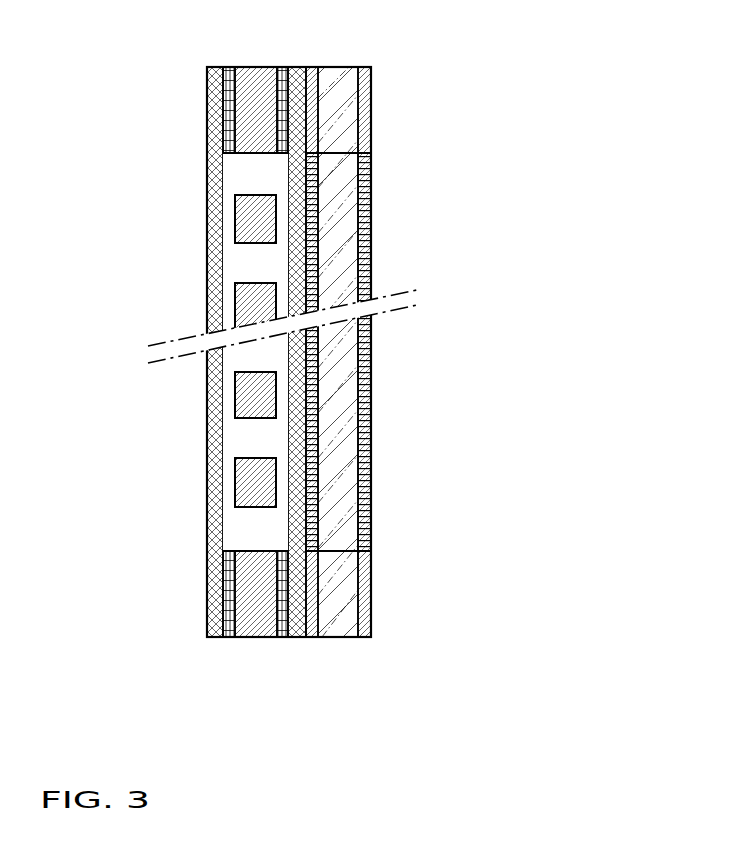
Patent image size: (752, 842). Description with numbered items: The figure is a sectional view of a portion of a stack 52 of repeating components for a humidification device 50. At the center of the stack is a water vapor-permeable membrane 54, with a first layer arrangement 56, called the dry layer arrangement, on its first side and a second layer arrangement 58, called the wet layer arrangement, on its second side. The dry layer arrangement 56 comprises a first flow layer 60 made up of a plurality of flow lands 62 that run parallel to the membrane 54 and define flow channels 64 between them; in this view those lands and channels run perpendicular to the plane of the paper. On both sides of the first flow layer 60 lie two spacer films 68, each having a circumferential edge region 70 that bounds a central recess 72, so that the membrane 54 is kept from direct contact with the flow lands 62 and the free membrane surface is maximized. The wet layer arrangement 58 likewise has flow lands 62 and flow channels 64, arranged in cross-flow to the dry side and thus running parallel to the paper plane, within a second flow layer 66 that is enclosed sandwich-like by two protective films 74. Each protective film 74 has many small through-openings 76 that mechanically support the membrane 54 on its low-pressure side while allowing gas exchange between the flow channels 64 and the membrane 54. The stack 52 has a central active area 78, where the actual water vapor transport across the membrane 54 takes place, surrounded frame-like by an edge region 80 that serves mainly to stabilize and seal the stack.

The humidification device 50 is at (329, 374).
The stack 52 is at (252, 375).
The water vapor-permeable membrane 54 is at (212, 598).
The first layer arrangement 56 is at (288, 375).
The second layer arrangement 58 is at (388, 375).
The first flow layer 60 is at (207, 380).
The flow lands 62 is at (243, 466).
The flow channels 64 is at (288, 342).
The second flow layer 66 is at (339, 627).
The spacer films 68 is at (226, 640).
The circumferential edge region 70 is at (230, 567).
The central recess 72 is at (288, 352).
The protective films 74 is at (313, 640).
The through-openings 76 is at (388, 351).
The active area 78 is at (383, 232).
The edge region 80 is at (383, 130).